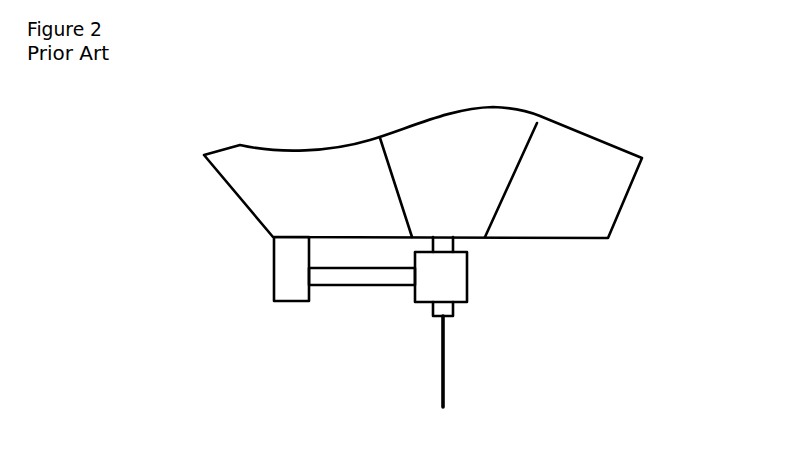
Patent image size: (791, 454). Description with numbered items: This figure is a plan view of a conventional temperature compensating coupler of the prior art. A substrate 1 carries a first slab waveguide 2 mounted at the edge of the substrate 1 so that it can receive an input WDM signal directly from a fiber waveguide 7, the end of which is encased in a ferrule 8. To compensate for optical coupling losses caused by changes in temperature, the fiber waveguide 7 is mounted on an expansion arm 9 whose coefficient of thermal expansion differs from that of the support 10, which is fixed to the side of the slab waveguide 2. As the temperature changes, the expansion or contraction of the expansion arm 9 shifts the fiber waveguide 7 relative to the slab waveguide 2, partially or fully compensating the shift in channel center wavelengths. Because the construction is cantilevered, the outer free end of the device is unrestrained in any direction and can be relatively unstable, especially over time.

The substrate 1 is at (568, 186).
The first slab waveguide 2 is at (432, 122).
The fiber waveguide 7 is at (448, 383).
The ferrule 8 is at (447, 317).
The expansion arm 9 is at (362, 285).
The support 10 is at (292, 283).